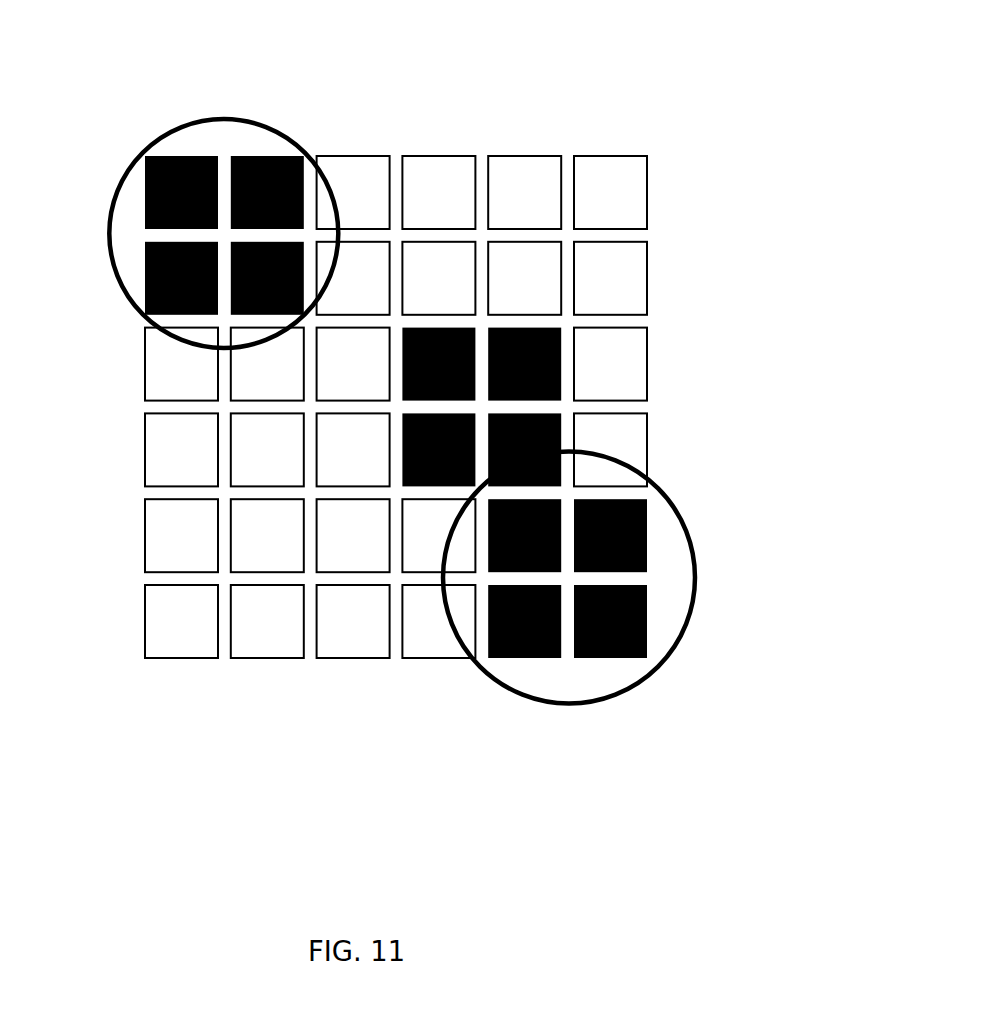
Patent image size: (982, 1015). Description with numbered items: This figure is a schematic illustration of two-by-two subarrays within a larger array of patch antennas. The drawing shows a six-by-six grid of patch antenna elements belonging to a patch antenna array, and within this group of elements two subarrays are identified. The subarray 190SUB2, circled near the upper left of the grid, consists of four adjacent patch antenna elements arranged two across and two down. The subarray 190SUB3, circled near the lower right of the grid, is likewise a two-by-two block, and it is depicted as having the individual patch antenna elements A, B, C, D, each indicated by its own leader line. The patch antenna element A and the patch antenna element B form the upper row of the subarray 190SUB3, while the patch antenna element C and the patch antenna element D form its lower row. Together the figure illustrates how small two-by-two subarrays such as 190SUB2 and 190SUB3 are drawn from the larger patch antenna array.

The 2×2 subarray 190SUB2 is at (189, 185).
The 2×2 subarray 190SUB3 is at (571, 601).
The patch antenna element A is at (412, 603).
The patch antenna element B is at (674, 508).
The patch antenna element C is at (462, 671).
The patch antenna element D is at (686, 667).